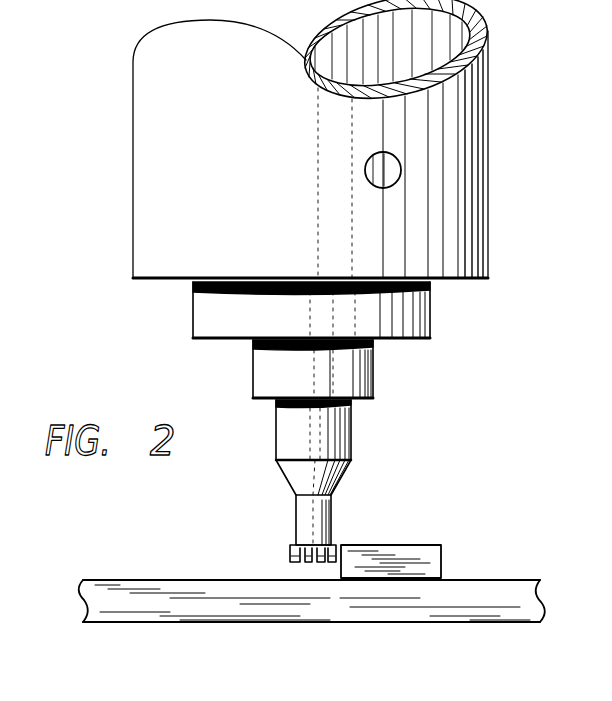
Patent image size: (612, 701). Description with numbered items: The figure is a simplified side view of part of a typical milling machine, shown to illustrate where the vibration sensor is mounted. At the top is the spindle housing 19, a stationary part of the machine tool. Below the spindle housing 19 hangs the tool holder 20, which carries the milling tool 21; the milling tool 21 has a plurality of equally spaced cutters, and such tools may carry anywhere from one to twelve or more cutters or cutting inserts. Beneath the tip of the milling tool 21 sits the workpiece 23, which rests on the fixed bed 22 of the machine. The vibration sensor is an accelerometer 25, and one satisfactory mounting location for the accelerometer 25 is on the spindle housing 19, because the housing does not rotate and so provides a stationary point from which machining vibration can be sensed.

The spindle housing 19 is at (432, 312).
The tool holder 20 is at (353, 430).
The milling tool 21 is at (306, 510).
The fixed bed 22 is at (128, 580).
The workpiece 23 is at (443, 556).
The accelerometer 25 is at (398, 159).